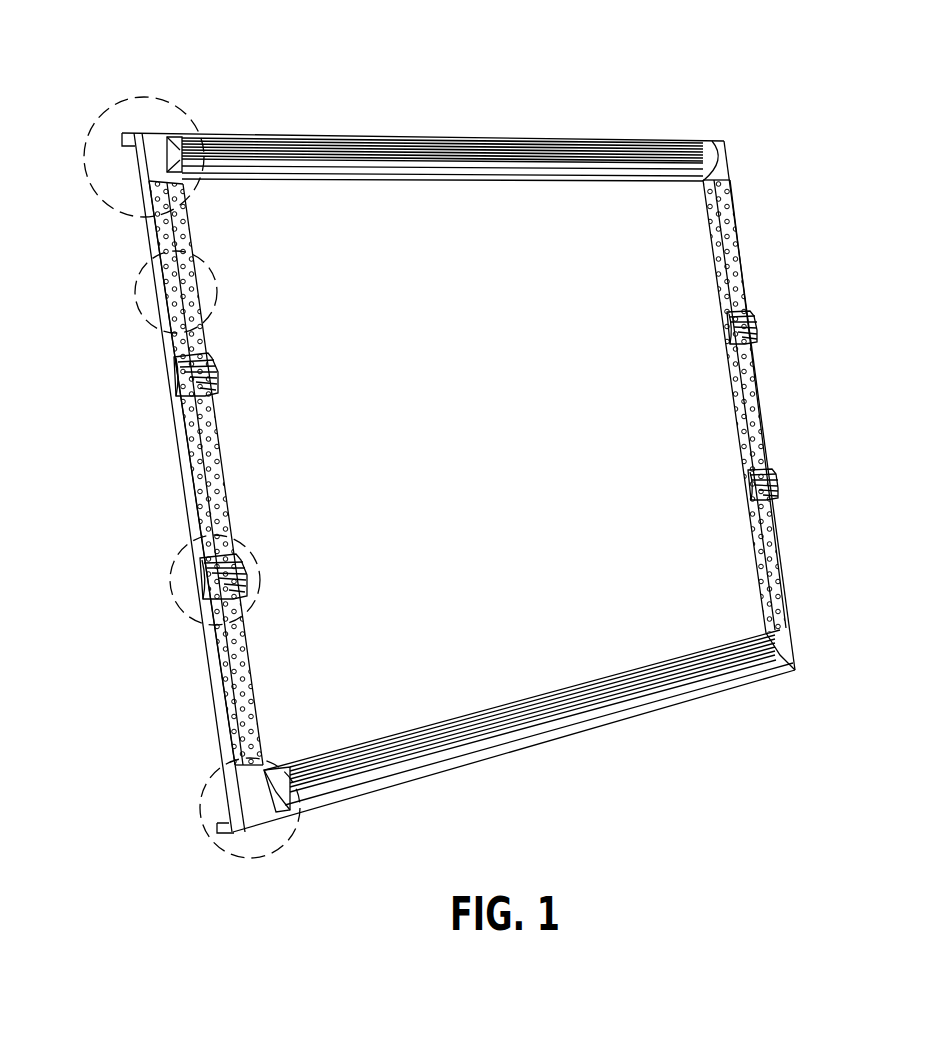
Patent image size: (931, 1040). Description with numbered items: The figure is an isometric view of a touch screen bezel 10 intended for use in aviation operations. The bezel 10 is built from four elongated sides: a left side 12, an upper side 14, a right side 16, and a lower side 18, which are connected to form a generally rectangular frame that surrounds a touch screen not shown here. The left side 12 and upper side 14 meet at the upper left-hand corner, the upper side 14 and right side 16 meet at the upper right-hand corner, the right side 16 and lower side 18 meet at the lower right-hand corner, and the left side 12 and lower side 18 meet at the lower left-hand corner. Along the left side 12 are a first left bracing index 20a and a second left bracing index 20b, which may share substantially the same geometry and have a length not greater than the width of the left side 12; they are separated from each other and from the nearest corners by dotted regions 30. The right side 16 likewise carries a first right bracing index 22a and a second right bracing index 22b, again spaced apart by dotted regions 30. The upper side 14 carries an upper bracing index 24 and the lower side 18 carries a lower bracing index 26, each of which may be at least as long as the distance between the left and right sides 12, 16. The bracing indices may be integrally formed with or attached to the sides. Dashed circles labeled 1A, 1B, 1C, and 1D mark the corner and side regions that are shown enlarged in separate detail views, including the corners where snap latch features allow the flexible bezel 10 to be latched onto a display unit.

The touch screen bezel 10 is at (450, 428).
The left side 12 is at (178, 455).
The upper side 14 is at (423, 438).
The right side 16 is at (757, 391).
The lower side 18 is at (514, 727).
The first left bracing index 20a is at (182, 380).
The second left bracing index 20b is at (245, 565).
The first right bracing index 22a is at (760, 322).
The second right bracing index 22b is at (780, 485).
The upper bracing index 24 is at (484, 162).
The lower bracing index 26 is at (553, 700).
The dotted regions 30 is at (148, 236).
The detail view circle 1A is at (125, 92).
The detail view circle 1B is at (130, 300).
The detail view circle 1C is at (165, 576).
The detail view circle 1D is at (203, 826).